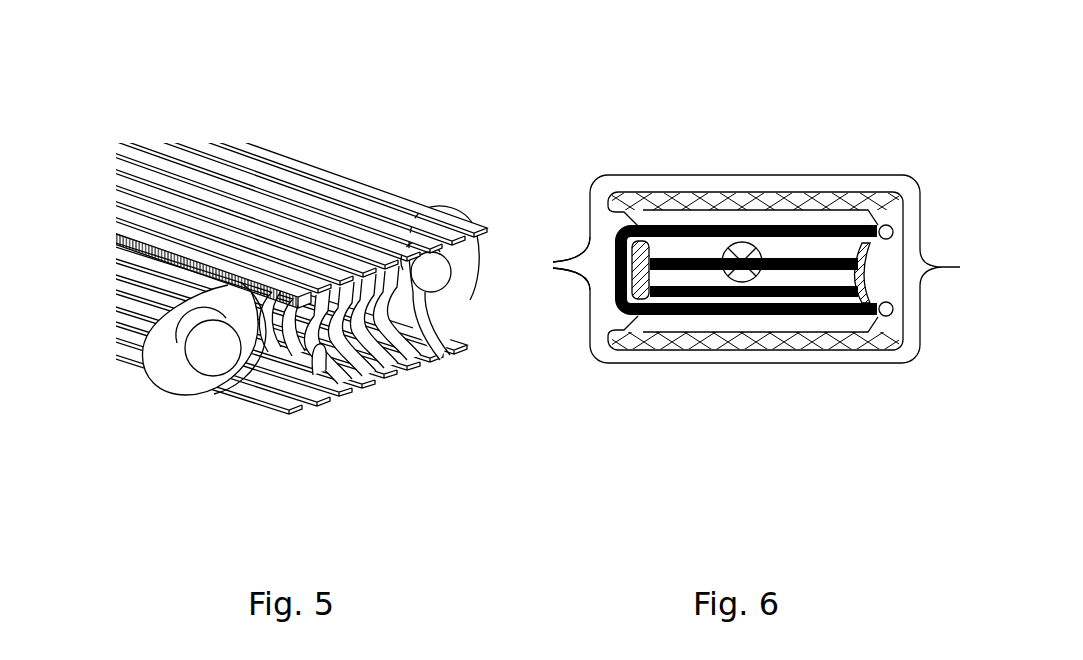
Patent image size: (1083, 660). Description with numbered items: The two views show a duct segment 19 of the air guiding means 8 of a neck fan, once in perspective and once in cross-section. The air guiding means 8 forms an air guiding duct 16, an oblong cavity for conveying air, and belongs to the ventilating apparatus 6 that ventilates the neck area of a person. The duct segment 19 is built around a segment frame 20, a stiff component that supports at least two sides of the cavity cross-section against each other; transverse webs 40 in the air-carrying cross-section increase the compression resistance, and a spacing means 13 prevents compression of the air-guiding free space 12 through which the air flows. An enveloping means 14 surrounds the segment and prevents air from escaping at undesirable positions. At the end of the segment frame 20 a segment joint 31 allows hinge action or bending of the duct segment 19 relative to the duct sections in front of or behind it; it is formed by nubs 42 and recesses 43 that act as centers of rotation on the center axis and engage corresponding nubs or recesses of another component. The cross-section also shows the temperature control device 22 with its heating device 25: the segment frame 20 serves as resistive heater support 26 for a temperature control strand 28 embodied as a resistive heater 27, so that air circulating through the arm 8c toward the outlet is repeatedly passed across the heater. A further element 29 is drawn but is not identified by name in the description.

In FIG. 5, the segment frame 20 is at (314, 268).
In FIG. 5, the spacing means 13 is at (283, 140).
In FIG. 5, the ventilating apparatus 6 is at (289, 139).
In FIG. 5, the air guiding duct 16 is at (289, 139).
In FIG. 5, the duct segment 19 is at (289, 139).
In FIG. 5, the resistive heater support 26 is at (361, 132).
In FIG. 6, the resistive heater support 26 is at (899, 193).
In FIG. 5, the nubs 42 is at (210, 355).
In FIG. 5, the segment joint 31 is at (335, 358).
In FIG. 5, the recesses 43 is at (434, 273).
In FIG. 5, the temperature control strand 28 is at (348, 314).
In FIG. 6, the temperature control strand 28 is at (614, 318).
In FIG. 6, the enveloping means 14 is at (726, 237).
In FIG. 6, the transverse webs 40 is at (630, 207).
In FIG. 6, the air-guiding free space 12 is at (715, 285).
In FIG. 6, the air guiding means 8 is at (535, 217).
In FIG. 6, the arm 8c is at (568, 218).
In FIG. 6, the temperature control device 22 is at (715, 340).
In FIG. 6, the heating device 25 is at (715, 340).
In FIG. 6, the resistive heater 27 is at (715, 340).
In FIG. 6, the insulating layer 29 is at (850, 355).